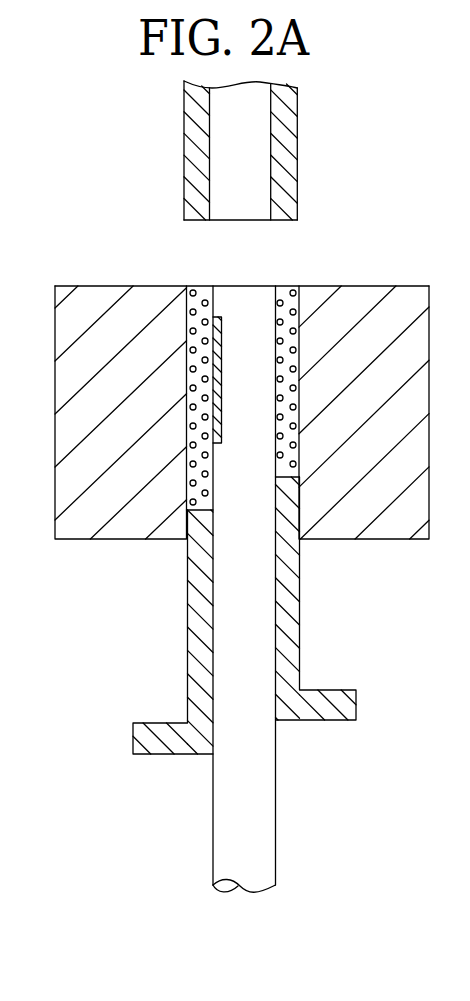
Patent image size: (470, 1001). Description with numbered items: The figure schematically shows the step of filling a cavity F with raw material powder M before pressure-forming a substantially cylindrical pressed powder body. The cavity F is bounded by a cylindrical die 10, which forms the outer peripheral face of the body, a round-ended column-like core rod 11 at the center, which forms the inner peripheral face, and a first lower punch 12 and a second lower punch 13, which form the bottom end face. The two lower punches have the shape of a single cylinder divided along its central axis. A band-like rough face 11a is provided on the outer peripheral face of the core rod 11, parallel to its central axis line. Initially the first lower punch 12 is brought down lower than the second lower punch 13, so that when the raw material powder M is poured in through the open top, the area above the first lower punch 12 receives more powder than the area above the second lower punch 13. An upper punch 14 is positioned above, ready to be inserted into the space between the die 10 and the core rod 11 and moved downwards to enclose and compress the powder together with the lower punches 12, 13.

The die 10 is at (400, 520).
The core rod 11 is at (263, 847).
The rough face 11a is at (220, 414).
The first lower punch 12 is at (166, 745).
The second lower punch 13 is at (345, 706).
The upper punch 14 is at (291, 156).
The raw material powder M is at (193, 289).
The cavity F is at (287, 287).